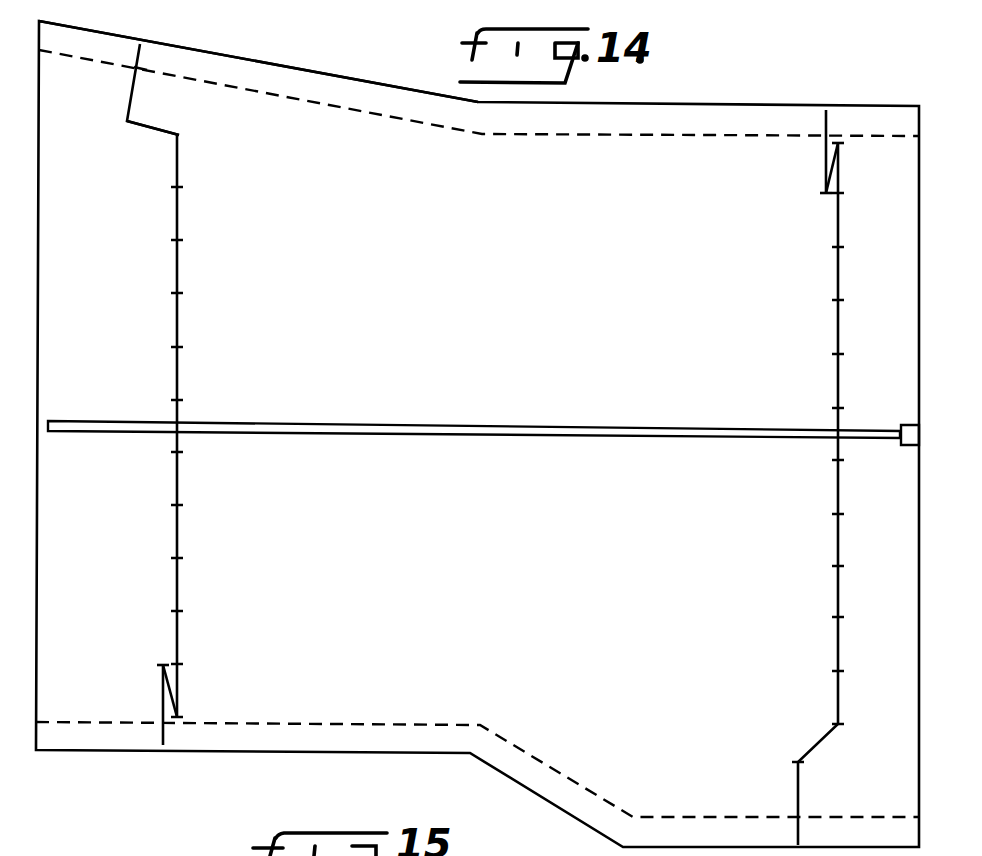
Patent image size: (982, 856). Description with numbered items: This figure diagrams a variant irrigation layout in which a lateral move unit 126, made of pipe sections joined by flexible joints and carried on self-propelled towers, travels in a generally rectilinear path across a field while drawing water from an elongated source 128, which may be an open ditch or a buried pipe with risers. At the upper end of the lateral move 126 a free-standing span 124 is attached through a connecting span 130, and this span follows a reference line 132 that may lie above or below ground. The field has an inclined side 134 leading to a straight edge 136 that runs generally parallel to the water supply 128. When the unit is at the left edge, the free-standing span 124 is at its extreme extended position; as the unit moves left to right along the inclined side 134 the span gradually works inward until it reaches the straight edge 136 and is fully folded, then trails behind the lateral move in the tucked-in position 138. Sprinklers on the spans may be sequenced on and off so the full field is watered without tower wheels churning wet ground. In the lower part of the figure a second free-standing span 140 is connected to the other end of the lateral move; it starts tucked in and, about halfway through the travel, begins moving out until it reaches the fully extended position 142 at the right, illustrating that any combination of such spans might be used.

The free-standing span 124 is at (127, 94).
The lateral move unit 126 is at (168, 320).
The elongated source 128 is at (490, 401).
The connecting span 130 is at (155, 138).
The reference line 132 is at (473, 146).
The inclined side 134 is at (275, 58).
The straight edge 136 is at (680, 103).
The tucked-in position 138 is at (826, 170).
The free-standing span 140 is at (160, 700).
The fully extended position 142 is at (798, 786).